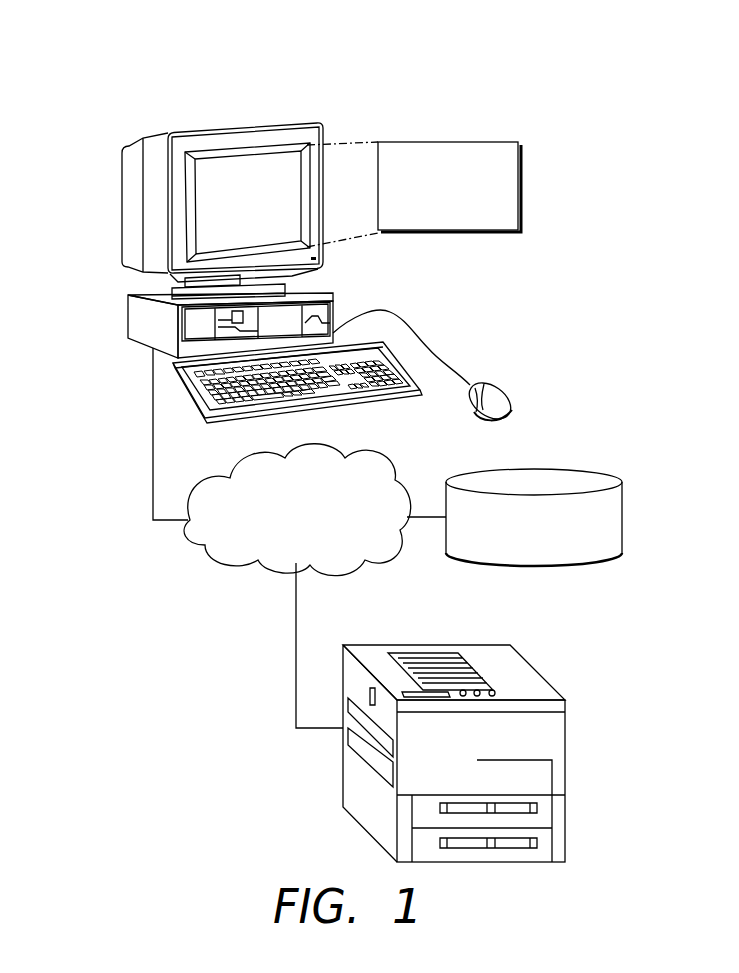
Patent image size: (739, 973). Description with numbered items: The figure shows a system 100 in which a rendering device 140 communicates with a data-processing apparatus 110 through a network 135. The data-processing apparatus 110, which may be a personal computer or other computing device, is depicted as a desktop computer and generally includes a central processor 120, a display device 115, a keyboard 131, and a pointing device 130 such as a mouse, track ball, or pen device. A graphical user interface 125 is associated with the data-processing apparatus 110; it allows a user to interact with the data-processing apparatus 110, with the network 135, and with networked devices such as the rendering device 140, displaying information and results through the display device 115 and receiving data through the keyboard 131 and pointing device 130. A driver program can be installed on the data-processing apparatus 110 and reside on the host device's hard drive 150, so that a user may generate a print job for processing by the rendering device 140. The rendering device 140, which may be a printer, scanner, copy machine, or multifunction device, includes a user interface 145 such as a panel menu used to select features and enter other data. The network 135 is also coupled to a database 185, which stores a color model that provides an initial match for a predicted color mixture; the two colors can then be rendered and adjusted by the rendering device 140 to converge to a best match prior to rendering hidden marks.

The system 100 is at (403, 62).
The data-processing apparatus 110 is at (290, 123).
The display device 115 is at (238, 180).
The central processor 120 is at (143, 348).
The user interface 125 is at (448, 141).
The pointing device 130 is at (423, 323).
The keyboard 131 is at (410, 367).
The network 135 is at (370, 455).
The rendering device 140 is at (520, 737).
The user interface 145 is at (492, 692).
The hard drive 150 is at (127, 315).
The database 185 is at (532, 467).